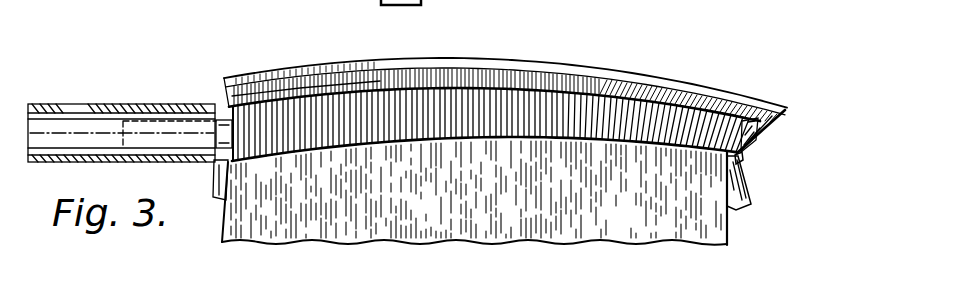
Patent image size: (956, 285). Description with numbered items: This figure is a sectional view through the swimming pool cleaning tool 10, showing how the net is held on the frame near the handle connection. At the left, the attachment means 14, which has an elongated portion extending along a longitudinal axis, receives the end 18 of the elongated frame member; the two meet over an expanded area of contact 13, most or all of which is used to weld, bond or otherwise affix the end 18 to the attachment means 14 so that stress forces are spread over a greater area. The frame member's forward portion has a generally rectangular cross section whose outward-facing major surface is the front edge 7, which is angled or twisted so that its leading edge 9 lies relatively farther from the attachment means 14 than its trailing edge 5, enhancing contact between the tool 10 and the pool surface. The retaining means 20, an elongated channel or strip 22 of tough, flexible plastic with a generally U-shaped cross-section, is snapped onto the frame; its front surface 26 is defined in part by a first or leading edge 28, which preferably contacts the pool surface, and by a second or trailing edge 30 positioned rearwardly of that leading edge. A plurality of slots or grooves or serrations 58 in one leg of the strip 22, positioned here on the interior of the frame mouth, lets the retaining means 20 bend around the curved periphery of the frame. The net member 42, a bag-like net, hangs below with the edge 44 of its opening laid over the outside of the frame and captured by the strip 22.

The trailing edge 5 is at (737, 163).
The front edge 7 is at (745, 152).
The leading edge 9 is at (752, 112).
The swimming pool cleaning tool 10 is at (528, 36).
The expanded area of contact 13 is at (153, 140).
The attachment means 14 is at (105, 103).
The end of elongated frame member 18 is at (213, 133).
The retaining means 20 is at (781, 137).
The elongated channel or strip 22 is at (605, 68).
The front surface 26 is at (688, 85).
The first or leading edge 28 is at (786, 108).
The second or trailing edge 30 is at (315, 96).
The net member 42 is at (728, 234).
The edge of net opening 44 is at (740, 202).
The slots or grooves or serrations 58 is at (458, 77).